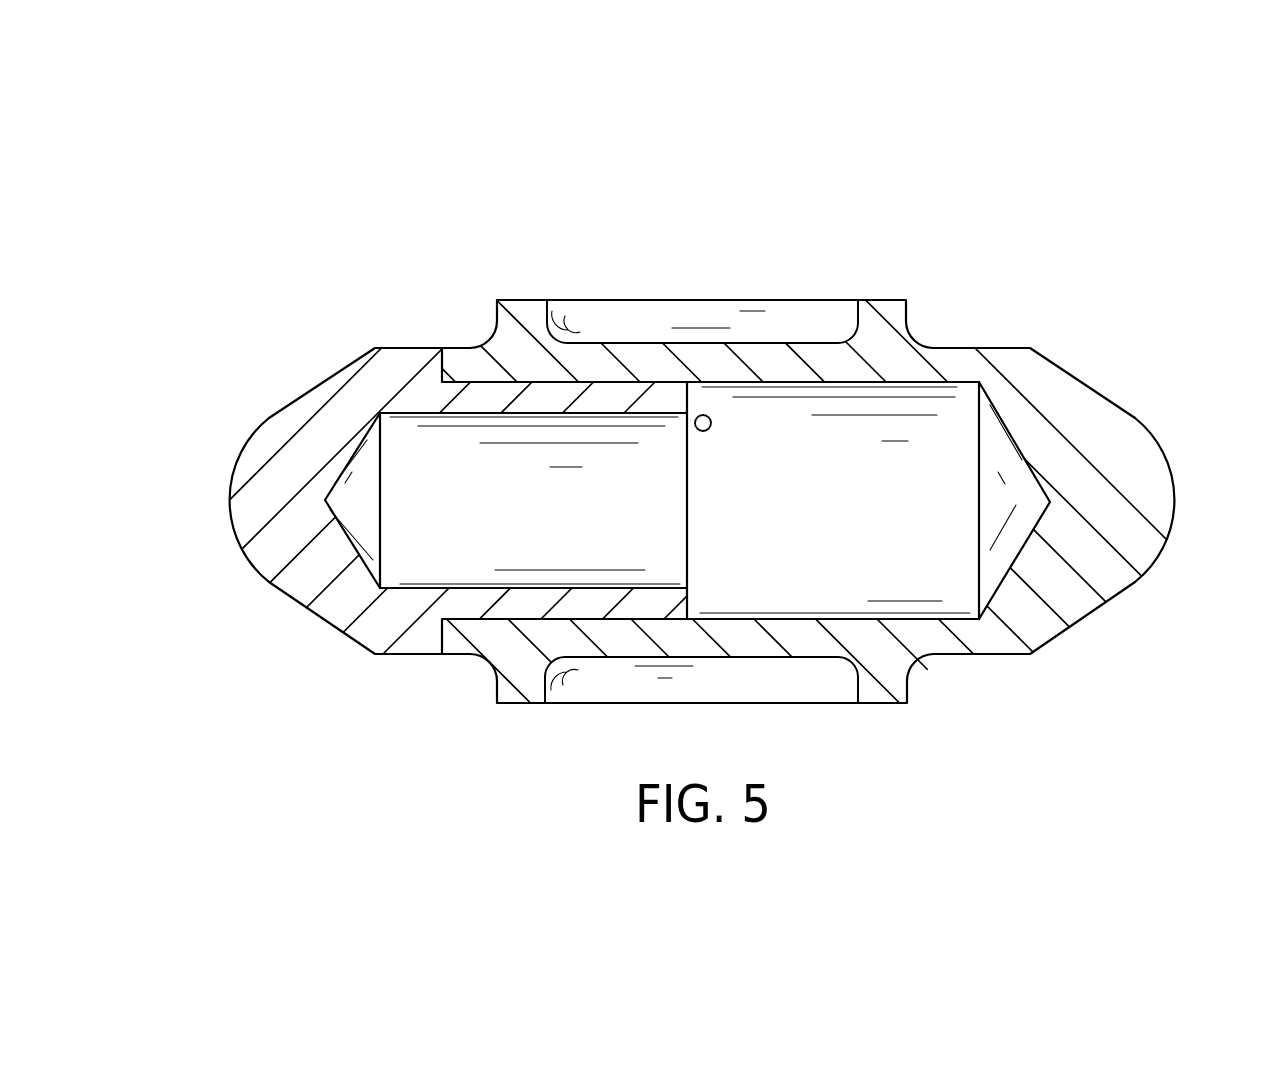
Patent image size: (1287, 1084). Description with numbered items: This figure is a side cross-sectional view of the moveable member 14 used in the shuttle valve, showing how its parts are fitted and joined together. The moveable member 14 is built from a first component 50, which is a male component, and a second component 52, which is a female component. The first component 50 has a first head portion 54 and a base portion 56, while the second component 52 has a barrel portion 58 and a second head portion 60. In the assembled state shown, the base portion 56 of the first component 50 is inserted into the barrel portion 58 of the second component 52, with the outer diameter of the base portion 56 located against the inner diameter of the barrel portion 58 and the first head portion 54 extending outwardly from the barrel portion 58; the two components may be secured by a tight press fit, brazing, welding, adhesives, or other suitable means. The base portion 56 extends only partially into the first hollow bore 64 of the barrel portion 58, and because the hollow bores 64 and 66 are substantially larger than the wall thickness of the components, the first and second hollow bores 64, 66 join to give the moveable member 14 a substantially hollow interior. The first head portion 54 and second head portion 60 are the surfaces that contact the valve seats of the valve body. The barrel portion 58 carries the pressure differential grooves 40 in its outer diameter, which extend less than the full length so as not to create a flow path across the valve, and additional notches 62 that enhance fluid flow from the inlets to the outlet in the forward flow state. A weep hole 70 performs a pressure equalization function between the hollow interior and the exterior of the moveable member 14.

The moveable member 14 is at (643, 451).
The pressure differential grooves 40 is at (833, 312).
The first component 50 is at (532, 526).
The second component 52 is at (643, 532).
The first head portion 54 is at (232, 495).
The base portion 56 is at (543, 395).
The barrel portion 58 is at (868, 645).
The second head portion 60 is at (1178, 485).
The notches 62 is at (488, 665).
The first hollow bore 64 is at (820, 536).
The second hollow bore 66 is at (486, 499).
The weep hole 70 is at (710, 413).